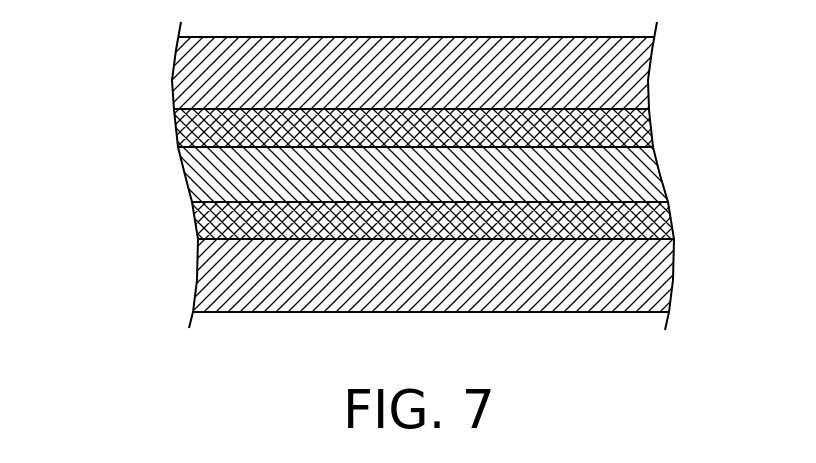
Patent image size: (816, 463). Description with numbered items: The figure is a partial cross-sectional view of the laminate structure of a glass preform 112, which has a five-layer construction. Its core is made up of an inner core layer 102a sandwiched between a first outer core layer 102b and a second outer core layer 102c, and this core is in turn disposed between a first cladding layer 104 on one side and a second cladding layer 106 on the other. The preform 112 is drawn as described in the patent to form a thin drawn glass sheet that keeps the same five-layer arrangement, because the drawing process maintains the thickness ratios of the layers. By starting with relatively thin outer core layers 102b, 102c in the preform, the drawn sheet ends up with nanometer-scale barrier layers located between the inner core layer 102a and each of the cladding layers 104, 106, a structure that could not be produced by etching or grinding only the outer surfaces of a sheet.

The glass preform 112 is at (132, 42).
The first cladding layer 104 is at (460, 73).
The first outer core layer 102b is at (469, 121).
The inner core layer 102a is at (475, 172).
The second outer core layer 102c is at (491, 212).
The second cladding layer 106 is at (483, 275).